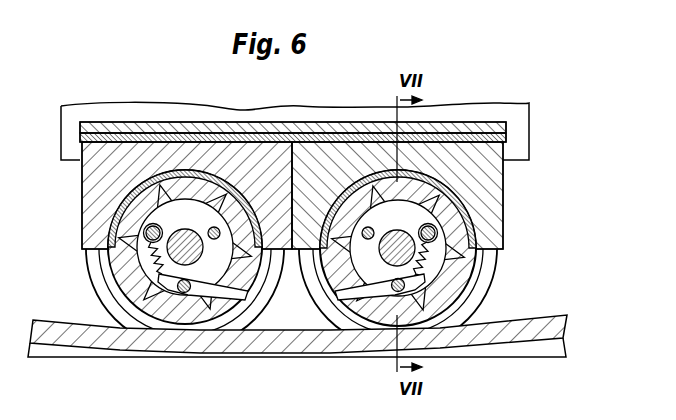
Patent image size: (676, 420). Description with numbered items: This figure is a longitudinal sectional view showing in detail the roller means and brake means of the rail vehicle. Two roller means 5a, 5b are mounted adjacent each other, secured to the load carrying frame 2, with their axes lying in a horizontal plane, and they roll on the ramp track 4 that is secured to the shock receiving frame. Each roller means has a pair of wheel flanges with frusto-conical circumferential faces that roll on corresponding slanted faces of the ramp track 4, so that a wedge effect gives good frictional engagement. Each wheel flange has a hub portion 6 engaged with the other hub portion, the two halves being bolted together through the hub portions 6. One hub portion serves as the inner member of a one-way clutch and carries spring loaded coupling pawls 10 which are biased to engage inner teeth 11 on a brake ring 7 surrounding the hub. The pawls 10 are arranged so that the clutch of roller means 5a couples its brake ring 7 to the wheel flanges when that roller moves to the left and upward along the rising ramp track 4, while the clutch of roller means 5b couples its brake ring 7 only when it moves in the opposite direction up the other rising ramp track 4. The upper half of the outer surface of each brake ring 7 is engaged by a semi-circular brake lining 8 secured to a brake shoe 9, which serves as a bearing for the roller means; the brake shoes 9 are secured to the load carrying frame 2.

The load carrying frame 2 is at (519, 137).
The ramp track 4 is at (566, 320).
The roller means 5a is at (97, 258).
The roller means 5b is at (484, 270).
The hub portion 6 is at (357, 255).
The brake ring 7 is at (122, 260).
The brake lining 8 is at (140, 200).
The brake shoe 9 is at (167, 160).
The coupling pawl 10 is at (372, 287).
The inner teeth 11 is at (150, 282).